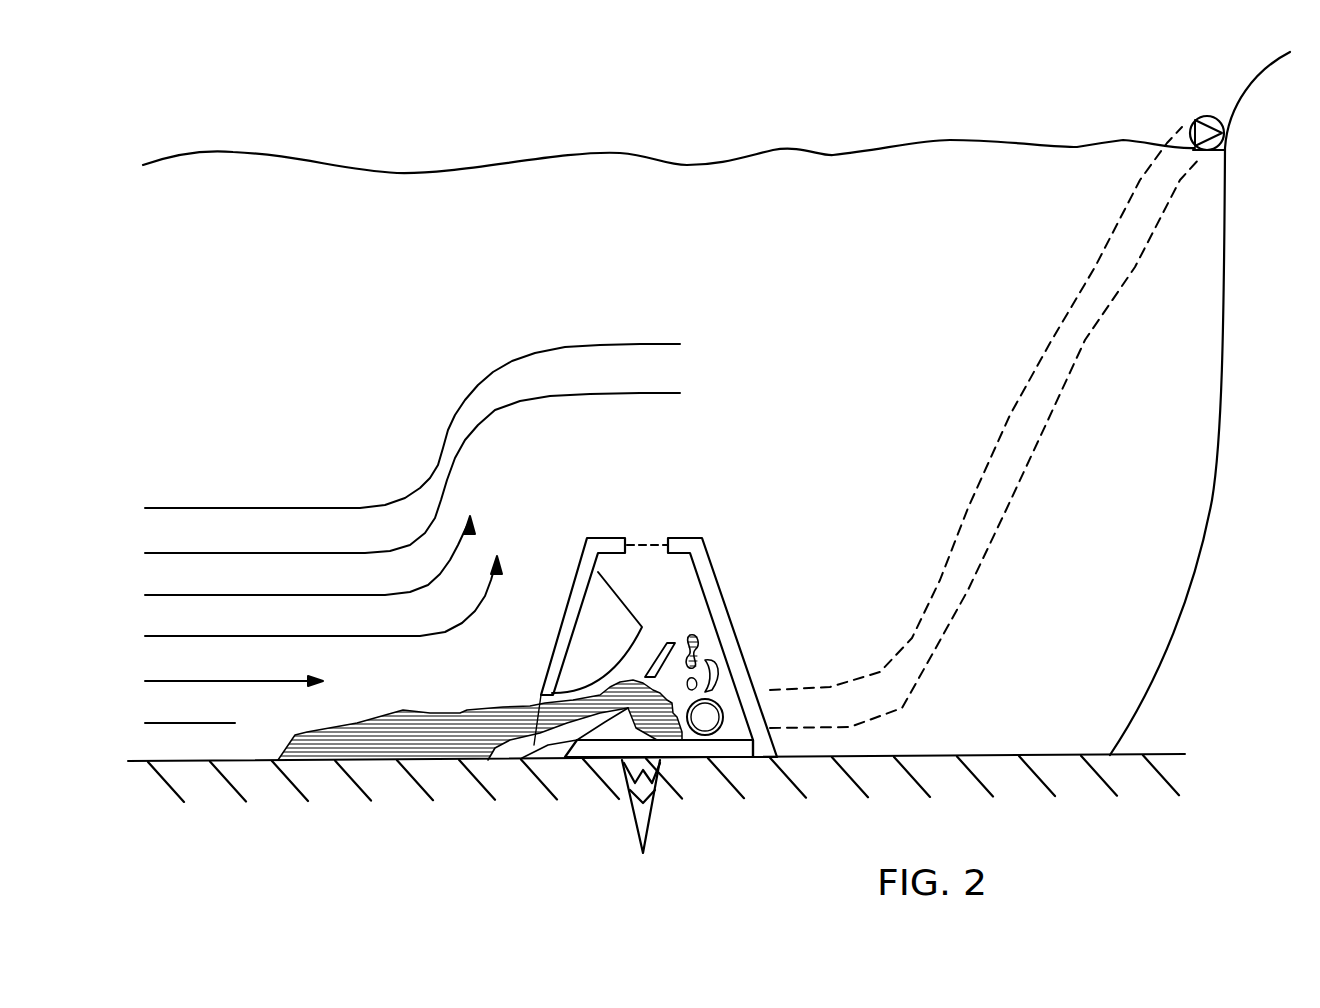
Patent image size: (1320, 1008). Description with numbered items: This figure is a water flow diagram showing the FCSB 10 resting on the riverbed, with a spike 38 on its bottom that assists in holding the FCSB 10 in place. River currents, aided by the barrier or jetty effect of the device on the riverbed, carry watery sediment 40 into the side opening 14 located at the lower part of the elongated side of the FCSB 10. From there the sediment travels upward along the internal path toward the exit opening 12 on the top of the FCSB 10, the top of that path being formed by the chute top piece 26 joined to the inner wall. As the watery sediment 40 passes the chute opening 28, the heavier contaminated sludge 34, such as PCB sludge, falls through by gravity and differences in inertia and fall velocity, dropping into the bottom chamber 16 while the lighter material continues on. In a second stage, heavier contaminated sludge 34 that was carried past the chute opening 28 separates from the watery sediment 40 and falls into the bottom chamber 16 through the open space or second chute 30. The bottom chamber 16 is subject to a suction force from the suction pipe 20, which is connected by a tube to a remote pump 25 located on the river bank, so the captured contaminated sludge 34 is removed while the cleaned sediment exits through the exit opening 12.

The FCSB 10 is at (780, 517).
The exit opening 12 is at (668, 532).
The side opening 14 is at (488, 760).
The bottom chamber 16 is at (636, 728).
The suction pipe 20 is at (720, 708).
The remote pump 25 is at (1215, 115).
The chute top piece 26 is at (632, 622).
The chute opening 28 is at (587, 763).
The second chute 30 is at (695, 640).
The contaminated sludge 34 is at (672, 760).
The spike 38 is at (650, 833).
The watery sediment 40 is at (358, 757).